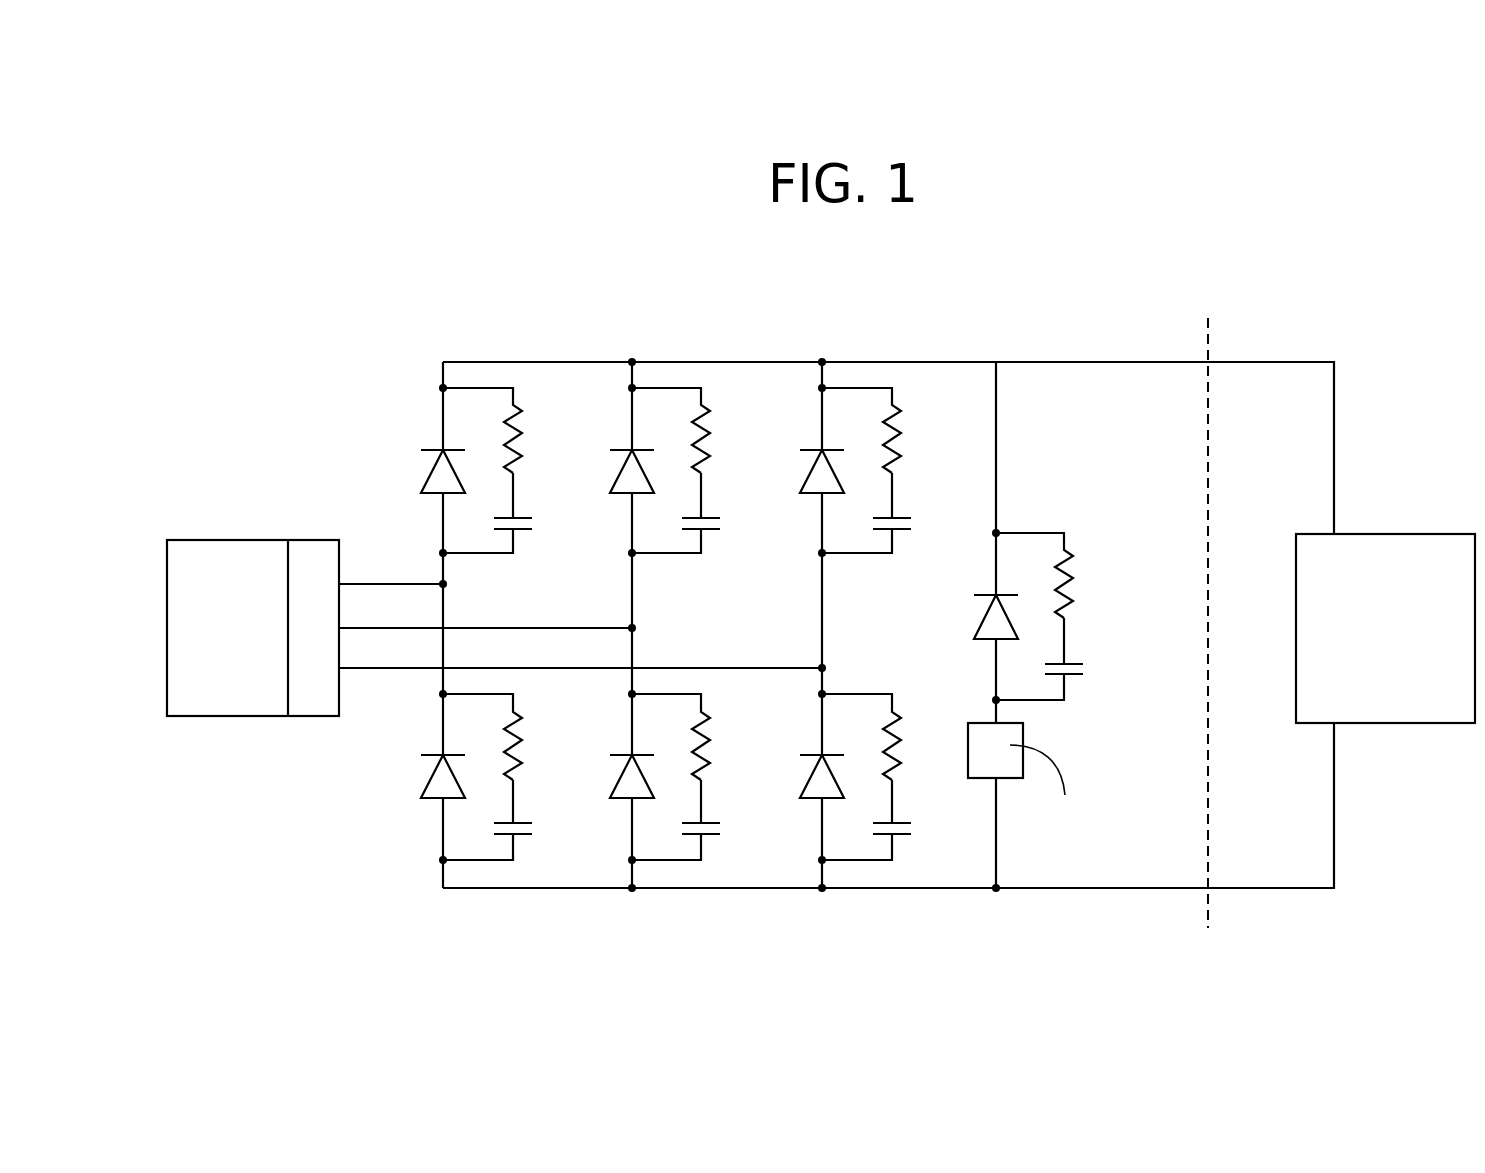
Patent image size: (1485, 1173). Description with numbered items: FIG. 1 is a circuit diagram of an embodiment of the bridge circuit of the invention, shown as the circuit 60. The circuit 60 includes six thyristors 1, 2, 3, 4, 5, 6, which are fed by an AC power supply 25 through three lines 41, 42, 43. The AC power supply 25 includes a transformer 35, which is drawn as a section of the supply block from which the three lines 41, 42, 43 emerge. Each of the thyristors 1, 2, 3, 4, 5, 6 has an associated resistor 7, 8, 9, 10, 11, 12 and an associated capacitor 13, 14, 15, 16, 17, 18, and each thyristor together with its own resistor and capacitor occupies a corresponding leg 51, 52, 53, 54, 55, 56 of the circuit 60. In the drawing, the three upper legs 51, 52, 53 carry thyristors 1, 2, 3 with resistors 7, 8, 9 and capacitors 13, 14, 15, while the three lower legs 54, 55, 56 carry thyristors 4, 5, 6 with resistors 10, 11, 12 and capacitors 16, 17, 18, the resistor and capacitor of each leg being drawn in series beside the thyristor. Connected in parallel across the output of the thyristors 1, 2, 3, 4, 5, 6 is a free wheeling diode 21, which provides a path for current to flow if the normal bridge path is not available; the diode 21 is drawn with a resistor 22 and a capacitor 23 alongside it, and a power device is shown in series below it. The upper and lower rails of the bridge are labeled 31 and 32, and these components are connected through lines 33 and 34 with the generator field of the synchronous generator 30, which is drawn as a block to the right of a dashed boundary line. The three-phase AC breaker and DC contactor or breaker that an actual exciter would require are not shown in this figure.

The thyristor 1 is at (430, 471).
The thyristor 2 is at (620, 471).
The thyristor 3 is at (810, 471).
The thyristor 4 is at (430, 778).
The thyristor 5 is at (620, 778).
The thyristor 6 is at (810, 778).
The resistor 7 is at (497, 430).
The resistor 8 is at (686, 430).
The resistor 9 is at (876, 430).
The resistor 10 is at (503, 735).
The resistor 11 is at (692, 735).
The resistor 12 is at (882, 735).
The capacitor 13 is at (506, 515).
The capacitor 14 is at (694, 515).
The capacitor 15 is at (884, 515).
The capacitor 16 is at (508, 820).
The capacitor 17 is at (696, 820).
The capacitor 18 is at (886, 820).
The free wheeling diode 21 is at (979, 619).
The resistor 22 is at (1058, 575).
The capacitor 23 is at (1059, 659).
The AC power supply 25 is at (218, 540).
The synchronous generator 30 is at (1376, 534).
The positive DC bus 31 is at (825, 345).
The negative DC bus 32 is at (825, 906).
The line 33 is at (1209, 431).
The line 34 is at (1211, 823).
The transformer 35 is at (312, 540).
The line 41 is at (393, 570).
The line 42 is at (487, 614).
The line 43 is at (582, 655).
The leg 51 is at (424, 388).
The leg 52 is at (613, 388).
The leg 53 is at (804, 388).
The leg 54 is at (425, 859).
The leg 55 is at (614, 859).
The leg 56 is at (805, 859).
The circuit 60 is at (722, 305).